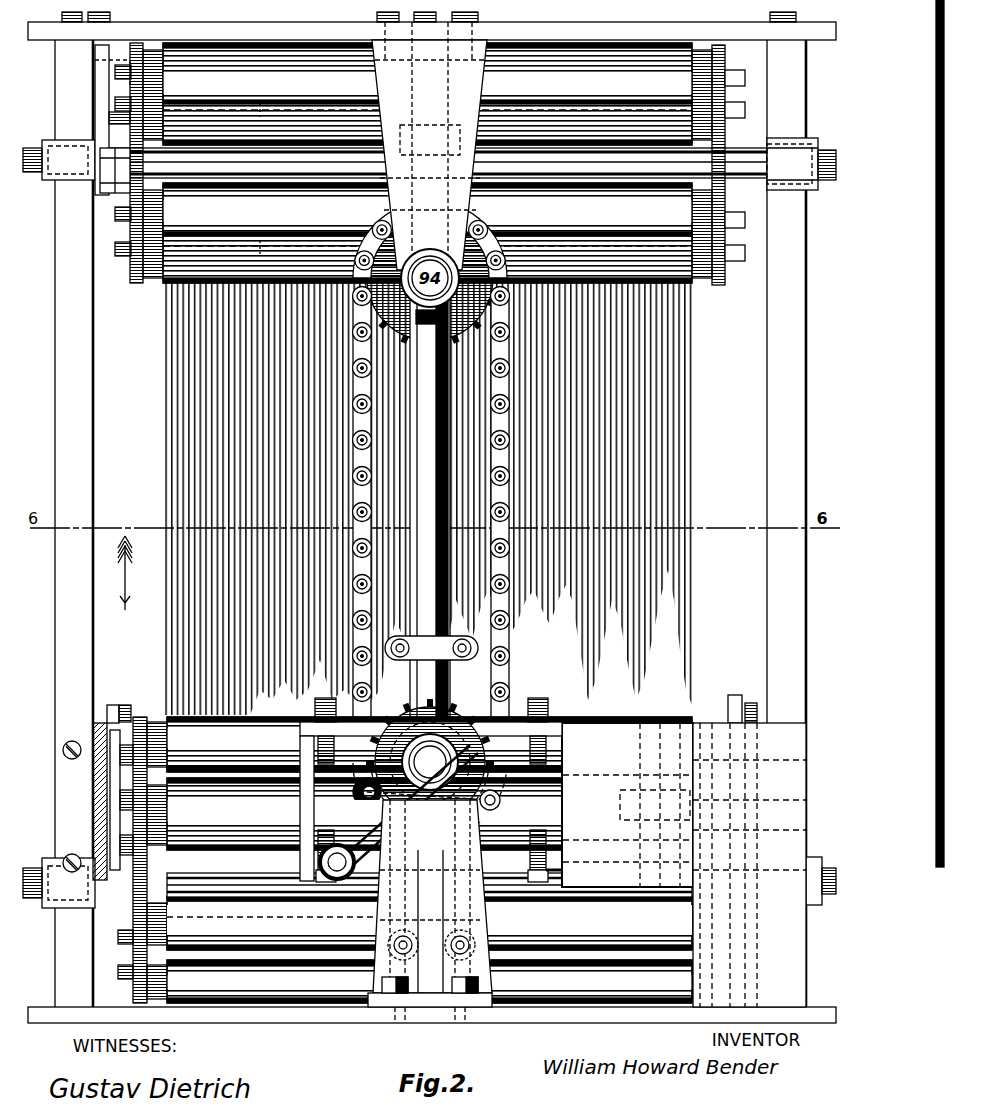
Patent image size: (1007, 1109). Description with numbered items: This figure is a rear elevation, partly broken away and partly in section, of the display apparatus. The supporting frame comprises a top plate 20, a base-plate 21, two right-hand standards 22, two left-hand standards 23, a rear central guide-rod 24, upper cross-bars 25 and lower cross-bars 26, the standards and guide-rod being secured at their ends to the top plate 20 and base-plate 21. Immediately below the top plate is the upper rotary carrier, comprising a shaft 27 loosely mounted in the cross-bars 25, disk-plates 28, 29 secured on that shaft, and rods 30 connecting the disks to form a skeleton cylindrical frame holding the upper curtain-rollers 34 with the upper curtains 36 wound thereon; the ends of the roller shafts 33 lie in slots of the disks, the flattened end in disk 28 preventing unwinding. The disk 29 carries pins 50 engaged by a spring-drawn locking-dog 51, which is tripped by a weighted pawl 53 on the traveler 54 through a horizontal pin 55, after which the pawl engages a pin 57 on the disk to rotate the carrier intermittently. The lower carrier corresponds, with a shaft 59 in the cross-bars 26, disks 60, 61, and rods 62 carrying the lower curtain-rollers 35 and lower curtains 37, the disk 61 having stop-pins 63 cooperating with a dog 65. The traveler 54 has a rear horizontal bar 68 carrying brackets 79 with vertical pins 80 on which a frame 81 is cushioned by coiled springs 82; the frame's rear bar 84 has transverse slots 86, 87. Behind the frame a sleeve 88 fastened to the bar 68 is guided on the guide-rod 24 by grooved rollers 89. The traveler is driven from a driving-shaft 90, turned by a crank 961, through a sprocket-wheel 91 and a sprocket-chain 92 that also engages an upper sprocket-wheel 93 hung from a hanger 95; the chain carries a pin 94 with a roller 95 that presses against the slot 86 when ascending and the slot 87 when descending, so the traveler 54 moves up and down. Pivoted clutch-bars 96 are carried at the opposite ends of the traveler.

The top plate 20 is at (33, 30).
The base-plate 21 is at (350, 1023).
The right-hand standards 22 is at (74, 523).
The left-hand standards 23 is at (786, 523).
The rear central guide-rod 24 is at (445, 626).
The cross-bars 25 is at (48, 180).
The cross-bars 26 is at (50, 908).
The shaft 27 is at (826, 190).
The disk-plate 28 is at (720, 285).
The disk-plate 29 is at (136, 283).
The rods 30 is at (170, 135).
The shafts 33 is at (115, 249).
The upper curtain-rollers 34 is at (155, 71).
The lower curtain-rollers 35 is at (157, 748).
The upper curtains 36 is at (427, 163).
The lower curtains 37 is at (429, 923).
The pins 50 is at (109, 118).
The locking-dog 51 is at (95, 86).
The pawl 53 is at (107, 768).
The traveler 54 is at (722, 722).
The pin 55 is at (107, 712).
The pin 57 is at (103, 165).
The shaft 59 is at (32, 868).
The disk 60 is at (133, 992).
The disk 61 is at (731, 949).
The rods 62 is at (150, 893).
The stop-pins 63 is at (760, 925).
The dog 65 is at (760, 951).
The rear horizontal bar 68 is at (684, 865).
The brackets 79 is at (316, 738).
The vertical pins 80 is at (325, 700).
The frame 81 is at (556, 835).
The coiled springs 82 is at (318, 756).
The rear bar 84 is at (456, 818).
The transverse slot 86 is at (360, 795).
The transverse slot 87 is at (540, 810).
The sleeve 88 is at (410, 678).
The grooved rollers 89 is at (400, 639).
The driving-shaft 90 is at (430, 758).
The sprocket-wheel 91 is at (465, 712).
The sprocket-chain 92 is at (352, 460).
The sprocket-wheel 93 is at (402, 338).
The pin 94 is at (354, 790).
The roller 95 is at (429, 161).
The clutch-bars 96 is at (124, 700).
The crank 961 is at (399, 812).